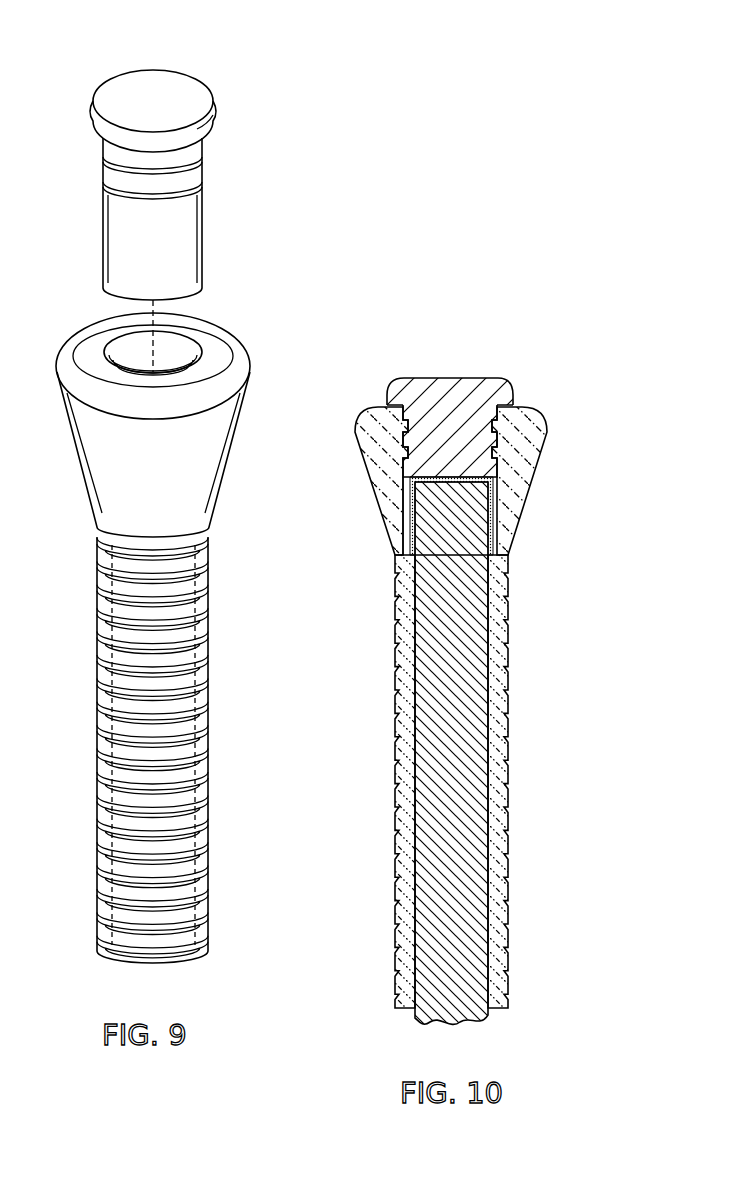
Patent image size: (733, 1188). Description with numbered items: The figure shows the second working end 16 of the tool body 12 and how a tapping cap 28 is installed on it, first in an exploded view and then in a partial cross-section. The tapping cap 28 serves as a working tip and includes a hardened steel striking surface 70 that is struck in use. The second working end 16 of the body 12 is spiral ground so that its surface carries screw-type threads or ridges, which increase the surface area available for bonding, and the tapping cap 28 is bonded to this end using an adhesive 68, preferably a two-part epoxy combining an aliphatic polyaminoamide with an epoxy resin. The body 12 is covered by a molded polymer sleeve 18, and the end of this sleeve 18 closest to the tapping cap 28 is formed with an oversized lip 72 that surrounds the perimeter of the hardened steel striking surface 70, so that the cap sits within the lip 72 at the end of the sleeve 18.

In FIG. 10, the body 12 is at (453, 800).
In FIG. 9, the second working end 16 is at (166, 404).
In FIG. 10, the second working end 16 is at (478, 483).
In FIG. 9, the molded polymer sleeve 18 is at (208, 683).
In FIG. 10, the molded polymer sleeve 18 is at (395, 728).
In FIG. 9, the tapping cap 28 is at (245, 165).
In FIG. 10, the tapping cap 28 is at (430, 392).
In FIG. 10, the adhesive 68 is at (408, 532).
In FIG. 9, the hardened steel striking surface 70 is at (117, 95).
In FIG. 10, the hardened steel striking surface 70 is at (468, 380).
In FIG. 9, the oversized lip 72 is at (240, 353).
In FIG. 10, the oversized lip 72 is at (535, 412).